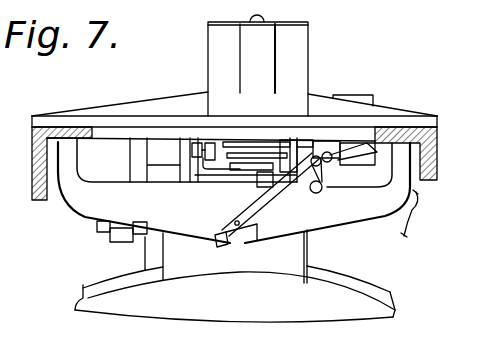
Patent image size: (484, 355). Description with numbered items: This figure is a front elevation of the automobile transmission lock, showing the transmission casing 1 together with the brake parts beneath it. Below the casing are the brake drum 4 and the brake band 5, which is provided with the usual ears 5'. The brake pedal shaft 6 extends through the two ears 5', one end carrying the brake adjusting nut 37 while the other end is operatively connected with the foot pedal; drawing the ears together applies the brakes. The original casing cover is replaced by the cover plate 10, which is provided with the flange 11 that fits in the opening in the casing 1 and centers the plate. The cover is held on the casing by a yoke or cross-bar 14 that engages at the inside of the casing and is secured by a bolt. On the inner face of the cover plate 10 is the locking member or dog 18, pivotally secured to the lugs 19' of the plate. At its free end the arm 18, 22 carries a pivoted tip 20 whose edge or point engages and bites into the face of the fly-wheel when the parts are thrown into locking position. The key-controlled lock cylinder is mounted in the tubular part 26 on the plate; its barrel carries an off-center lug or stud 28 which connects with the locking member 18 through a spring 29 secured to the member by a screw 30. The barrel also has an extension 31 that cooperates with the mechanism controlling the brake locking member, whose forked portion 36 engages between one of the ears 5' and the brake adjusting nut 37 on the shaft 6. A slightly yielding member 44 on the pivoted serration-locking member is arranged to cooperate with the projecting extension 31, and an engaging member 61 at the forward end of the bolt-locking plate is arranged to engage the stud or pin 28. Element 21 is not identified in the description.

The transmission casing 1 is at (436, 171).
The brake drum 4 is at (360, 317).
The brake band 5 is at (247, 311).
The ears 5' is at (235, 270).
The brake pedal shaft 6 is at (416, 220).
The cover plate 10 is at (428, 117).
The flange 11 is at (362, 135).
The cross-bar 14 is at (92, 198).
The locking member 18 is at (282, 196).
The lugs 19' is at (355, 164).
The tip 20 is at (238, 241).
The pivot bracket 21 is at (220, 242).
The arm 22 is at (235, 223).
The tubular part 26 is at (218, 49).
The lug or stud 28 is at (213, 176).
The spring 29 is at (315, 143).
The screw 30 is at (332, 179).
The extension 31 is at (228, 148).
The forked portion 36 is at (141, 226).
The brake adjusting nut 37 is at (118, 244).
The yielding member 44 is at (210, 145).
The engaging member 61 is at (222, 21).